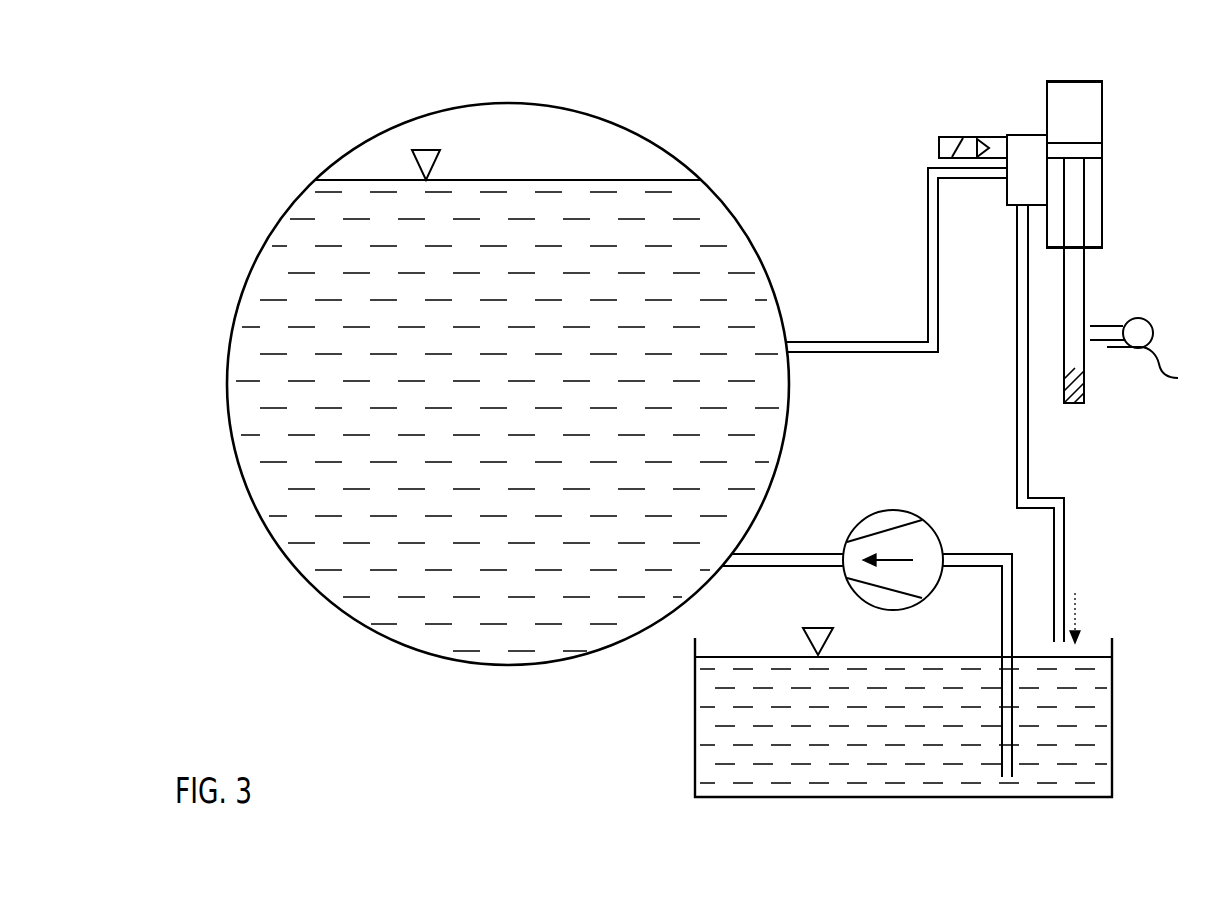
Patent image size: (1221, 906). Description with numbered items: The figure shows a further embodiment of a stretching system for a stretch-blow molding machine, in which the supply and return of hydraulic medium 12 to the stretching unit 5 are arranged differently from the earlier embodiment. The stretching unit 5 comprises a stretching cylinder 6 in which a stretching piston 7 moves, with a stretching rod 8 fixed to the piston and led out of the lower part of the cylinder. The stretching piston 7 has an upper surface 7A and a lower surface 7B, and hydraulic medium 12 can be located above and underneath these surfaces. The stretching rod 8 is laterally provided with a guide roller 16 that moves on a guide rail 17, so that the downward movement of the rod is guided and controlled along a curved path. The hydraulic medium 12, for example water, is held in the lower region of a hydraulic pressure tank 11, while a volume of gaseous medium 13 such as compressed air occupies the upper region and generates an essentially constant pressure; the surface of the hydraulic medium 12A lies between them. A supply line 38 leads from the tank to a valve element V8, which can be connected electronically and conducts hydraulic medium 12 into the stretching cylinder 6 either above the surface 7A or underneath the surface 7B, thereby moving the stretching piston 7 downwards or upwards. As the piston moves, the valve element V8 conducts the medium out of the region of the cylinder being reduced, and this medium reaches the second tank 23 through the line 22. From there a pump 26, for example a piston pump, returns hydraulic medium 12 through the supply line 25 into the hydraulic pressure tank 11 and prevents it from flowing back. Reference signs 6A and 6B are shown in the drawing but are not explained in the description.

The stretching unit 5 is at (1105, 210).
The stretching cylinder 6 is at (1105, 154).
The upper cylinder chamber 6A is at (1099, 91).
The lower cylinder chamber 6B is at (1097, 220).
The stretching piston 7 is at (1105, 153).
The upper surface of the stretching piston 7A is at (1091, 143).
The lower surface of the stretching piston 7B is at (1098, 160).
The stretching rod 8 is at (1085, 268).
The hydraulic pressure tank 11 is at (455, 107).
The hydraulic medium 12 is at (306, 578).
The surface of the hydraulic medium 12A is at (416, 167).
The gaseous medium 13 is at (409, 132).
The guide roller 16 is at (1138, 318).
The guide rail 17 is at (1155, 382).
The line 22 is at (1029, 447).
The second tank 23 is at (695, 770).
The supply line 25 is at (965, 554).
The pump 26 is at (867, 511).
The supply line 38 is at (866, 342).
The valve element V8 is at (972, 136).